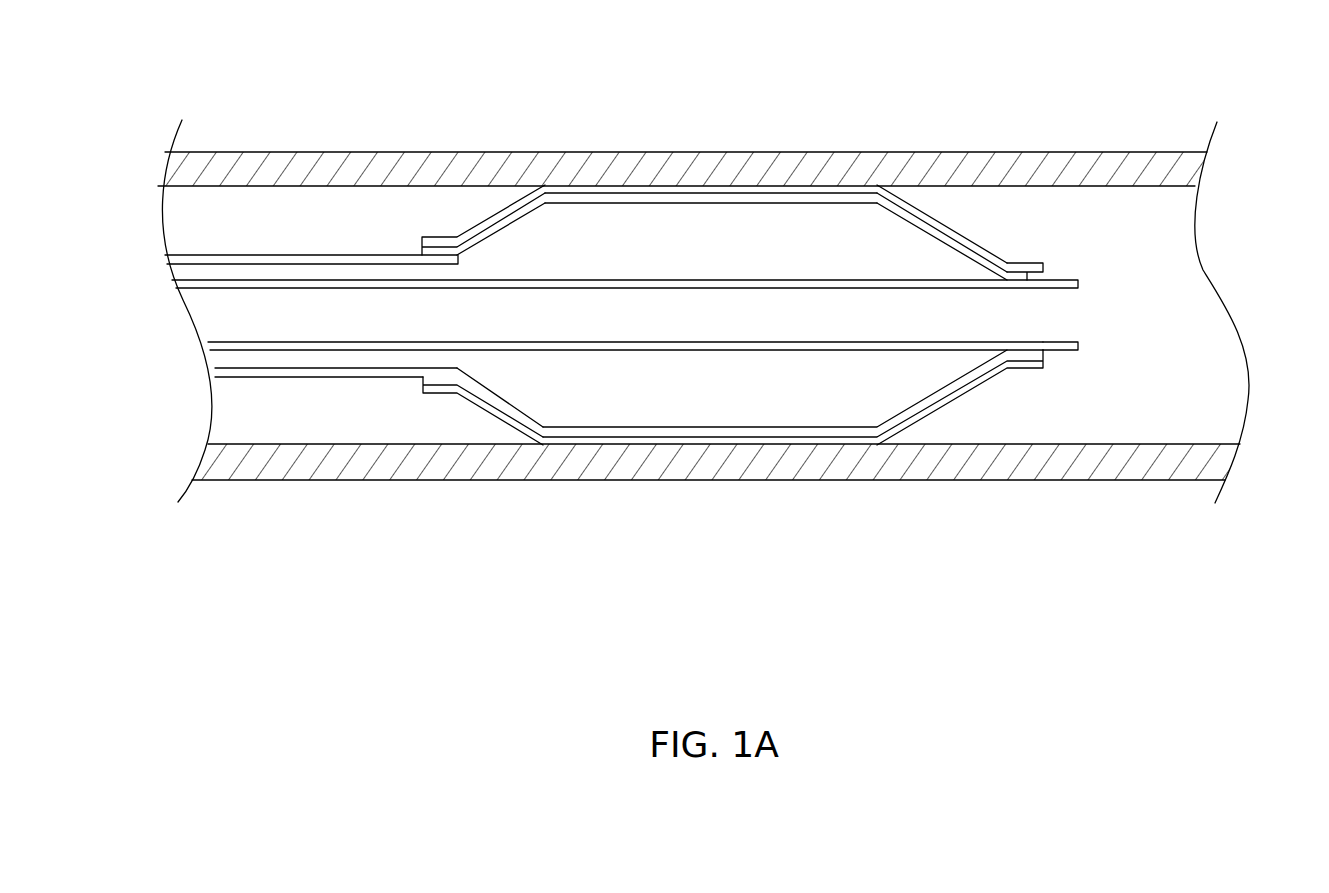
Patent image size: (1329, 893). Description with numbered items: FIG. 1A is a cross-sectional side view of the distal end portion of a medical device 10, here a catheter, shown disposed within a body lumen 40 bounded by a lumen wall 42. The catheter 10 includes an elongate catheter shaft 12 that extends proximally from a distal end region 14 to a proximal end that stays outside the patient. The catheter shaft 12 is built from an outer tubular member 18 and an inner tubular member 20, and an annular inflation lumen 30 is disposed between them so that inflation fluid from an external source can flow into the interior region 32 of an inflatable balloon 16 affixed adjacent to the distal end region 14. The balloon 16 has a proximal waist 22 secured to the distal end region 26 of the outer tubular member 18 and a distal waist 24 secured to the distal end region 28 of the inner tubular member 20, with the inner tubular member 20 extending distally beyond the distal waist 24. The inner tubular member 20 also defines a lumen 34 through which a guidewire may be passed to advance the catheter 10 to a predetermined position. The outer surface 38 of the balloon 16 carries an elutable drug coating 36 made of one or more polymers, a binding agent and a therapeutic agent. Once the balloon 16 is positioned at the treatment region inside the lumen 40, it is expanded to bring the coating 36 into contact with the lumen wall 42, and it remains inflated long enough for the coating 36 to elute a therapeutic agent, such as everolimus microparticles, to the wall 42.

The medical device 10 is at (943, 96).
The catheter shaft 12 is at (232, 255).
The distal end region 14 is at (333, 204).
The inflatable balloon 16 is at (945, 392).
The outer tubular member 18 is at (361, 378).
The inner tubular member 20 is at (700, 350).
The proximal waist 22 is at (441, 380).
The distal waist 24 is at (1028, 276).
The distal end region of outer tubular member 26 is at (418, 256).
The distal end region of inner tubular member 28 is at (1070, 345).
The annular inflation lumen 30 is at (322, 270).
The interior region 32 is at (576, 407).
The lumen 34 is at (292, 325).
The elutable drug coating 36 is at (848, 186).
The outer surface 38 is at (690, 192).
The body lumen 40 is at (1185, 293).
The lumen wall 42 is at (480, 165).